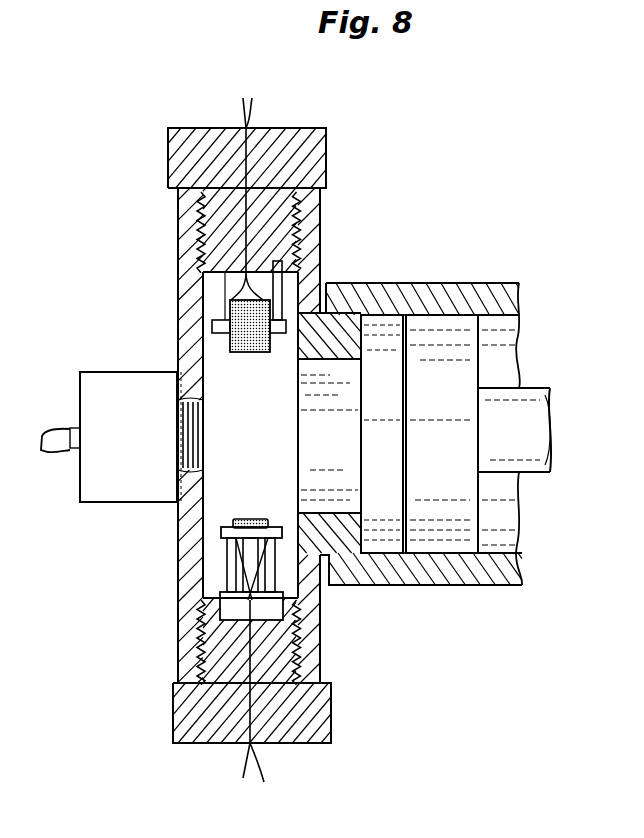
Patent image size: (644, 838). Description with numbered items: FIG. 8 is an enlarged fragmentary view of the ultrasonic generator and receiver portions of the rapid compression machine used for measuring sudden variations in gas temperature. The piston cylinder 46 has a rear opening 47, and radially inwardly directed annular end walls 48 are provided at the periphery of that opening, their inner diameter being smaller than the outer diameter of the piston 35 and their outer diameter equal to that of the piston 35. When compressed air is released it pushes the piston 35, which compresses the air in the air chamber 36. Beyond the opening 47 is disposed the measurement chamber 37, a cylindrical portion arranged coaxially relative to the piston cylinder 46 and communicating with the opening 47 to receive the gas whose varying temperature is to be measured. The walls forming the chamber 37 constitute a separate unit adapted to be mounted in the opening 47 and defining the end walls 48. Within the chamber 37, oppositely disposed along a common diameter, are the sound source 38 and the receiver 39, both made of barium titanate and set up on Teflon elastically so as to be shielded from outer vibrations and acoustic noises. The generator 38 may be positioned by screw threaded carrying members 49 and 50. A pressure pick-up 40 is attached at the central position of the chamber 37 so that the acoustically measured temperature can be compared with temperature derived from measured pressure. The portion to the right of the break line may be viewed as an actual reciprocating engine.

The piston 35 is at (457, 362).
The air chamber 36 is at (401, 328).
The cylindrical portion (measurement chamber) 37 is at (192, 605).
The sound source (sound generator) 38 is at (230, 304).
The receiver 39 is at (237, 518).
The pressure pick-up 40 is at (88, 486).
The piston cylinder 46 is at (485, 292).
The rear opening 47 is at (353, 480).
The annular end walls 48 is at (366, 330).
The screw threaded carrying member 49 is at (302, 145).
The screw threaded carrying member 50 is at (306, 740).